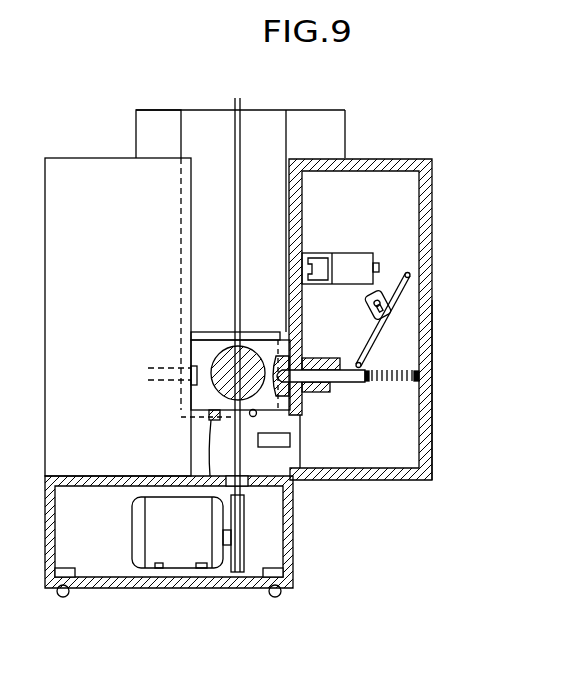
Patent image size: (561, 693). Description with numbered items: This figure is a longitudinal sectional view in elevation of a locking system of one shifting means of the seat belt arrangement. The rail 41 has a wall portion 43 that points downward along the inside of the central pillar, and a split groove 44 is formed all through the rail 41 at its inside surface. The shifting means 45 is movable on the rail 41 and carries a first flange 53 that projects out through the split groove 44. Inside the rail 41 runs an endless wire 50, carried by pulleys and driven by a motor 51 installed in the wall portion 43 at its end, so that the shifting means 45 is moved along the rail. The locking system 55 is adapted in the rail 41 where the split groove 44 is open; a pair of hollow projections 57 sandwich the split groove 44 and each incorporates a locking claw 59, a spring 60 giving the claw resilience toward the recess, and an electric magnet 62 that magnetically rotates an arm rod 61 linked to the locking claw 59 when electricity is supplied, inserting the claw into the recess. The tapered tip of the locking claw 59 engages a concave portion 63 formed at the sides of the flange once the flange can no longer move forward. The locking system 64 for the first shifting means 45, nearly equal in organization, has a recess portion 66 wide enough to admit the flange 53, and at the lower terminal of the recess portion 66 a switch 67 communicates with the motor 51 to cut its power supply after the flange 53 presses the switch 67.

The rail 41 is at (172, 104).
The wall portion 43 is at (147, 142).
The split groove 44 is at (289, 127).
The shifting means 45 is at (185, 335).
The endless wire 50 is at (238, 148).
The motor 51 is at (178, 552).
The first flange 53 is at (203, 393).
The locking system 55 is at (73, 168).
The hollow projections 57 is at (395, 160).
The locking claw 59 is at (348, 378).
The spring 60 is at (418, 380).
The arm rod 61 is at (398, 298).
The electric magnet 62 is at (360, 267).
The concave portion 63 is at (300, 390).
The locking system 64 is at (437, 459).
The recess portion 66 is at (262, 420).
The switch 67 is at (275, 447).